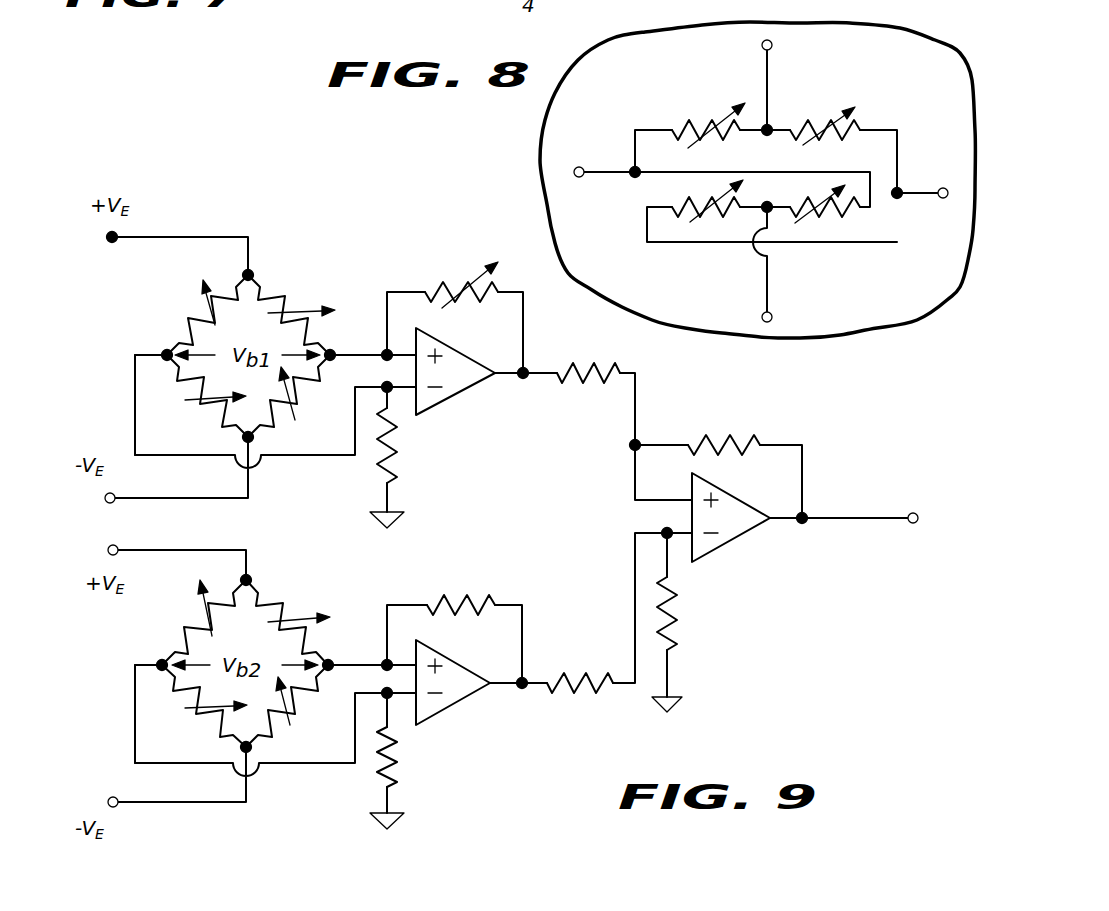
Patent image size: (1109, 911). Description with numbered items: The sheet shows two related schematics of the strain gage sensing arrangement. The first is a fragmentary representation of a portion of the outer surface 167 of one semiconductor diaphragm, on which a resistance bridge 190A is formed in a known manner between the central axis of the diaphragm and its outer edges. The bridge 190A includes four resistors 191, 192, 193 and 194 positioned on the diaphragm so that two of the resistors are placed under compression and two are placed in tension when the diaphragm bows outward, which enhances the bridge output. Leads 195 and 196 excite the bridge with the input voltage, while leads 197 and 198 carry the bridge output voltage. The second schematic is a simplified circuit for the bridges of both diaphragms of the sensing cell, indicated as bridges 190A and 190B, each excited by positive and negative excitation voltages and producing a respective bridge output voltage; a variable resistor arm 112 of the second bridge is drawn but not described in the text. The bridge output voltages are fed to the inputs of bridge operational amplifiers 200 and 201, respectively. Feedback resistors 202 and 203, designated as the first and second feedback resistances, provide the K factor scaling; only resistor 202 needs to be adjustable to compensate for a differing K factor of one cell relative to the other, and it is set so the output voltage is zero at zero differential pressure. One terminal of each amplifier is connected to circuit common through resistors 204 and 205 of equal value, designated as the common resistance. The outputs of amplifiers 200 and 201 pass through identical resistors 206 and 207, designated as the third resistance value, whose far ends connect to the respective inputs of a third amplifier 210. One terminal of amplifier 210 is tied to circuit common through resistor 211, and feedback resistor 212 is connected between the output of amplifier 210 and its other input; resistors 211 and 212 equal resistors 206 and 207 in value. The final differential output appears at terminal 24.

In FIG. 9, the output terminal 24 is at (883, 525).
In FIG. 9, the variable resistor arm of bridge 190B 112 is at (278, 610).
In FIG. 8, the outer surface 167 is at (713, 310).
In FIG. 8, the resistance bridge 190A is at (654, 107).
In FIG. 9, the resistance bridge 190A is at (277, 261).
In FIG. 9, the resistance bridge 190B is at (278, 578).
In FIG. 8, the resistor 191 is at (715, 120).
In FIG. 9, the resistor 191 is at (192, 317).
In FIG. 8, the resistor 192 is at (850, 122).
In FIG. 9, the resistor 192 is at (296, 325).
In FIG. 8, the resistor 193 is at (715, 216).
In FIG. 9, the resistor 193 is at (220, 410).
In FIG. 8, the resistor 194 is at (835, 214).
In FIG. 9, the resistor 194 is at (290, 395).
In FIG. 8, the lead 195 is at (768, 80).
In FIG. 8, the lead 196 is at (767, 288).
In FIG. 8, the lead 197 is at (582, 166).
In FIG. 9, the lead 197 is at (133, 398).
In FIG. 8, the lead 198 is at (922, 190).
In FIG. 9, the lead 198 is at (360, 660).
In FIG. 9, the bridge operational amplifier 200 is at (462, 392).
In FIG. 9, the bridge operational amplifier 201 is at (458, 703).
In FIG. 9, the amplifier feedback resistor 202 is at (465, 280).
In FIG. 9, the amplifier feedback resistor 203 is at (460, 592).
In FIG. 9, the resistor 204 is at (393, 478).
In FIG. 9, the resistor 205 is at (393, 787).
In FIG. 9, the resistor 206 is at (585, 387).
In FIG. 9, the resistor 207 is at (590, 687).
In FIG. 9, the third amplifier 210 is at (742, 537).
In FIG. 9, the resistor 211 is at (680, 612).
In FIG. 9, the feedback resistor 212 is at (756, 445).